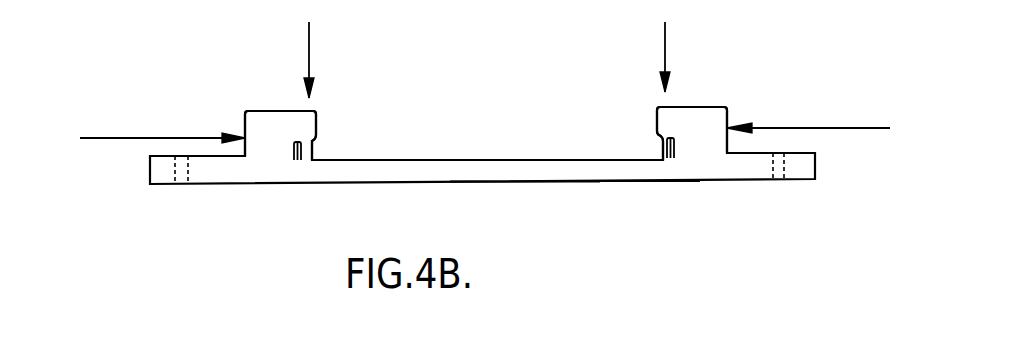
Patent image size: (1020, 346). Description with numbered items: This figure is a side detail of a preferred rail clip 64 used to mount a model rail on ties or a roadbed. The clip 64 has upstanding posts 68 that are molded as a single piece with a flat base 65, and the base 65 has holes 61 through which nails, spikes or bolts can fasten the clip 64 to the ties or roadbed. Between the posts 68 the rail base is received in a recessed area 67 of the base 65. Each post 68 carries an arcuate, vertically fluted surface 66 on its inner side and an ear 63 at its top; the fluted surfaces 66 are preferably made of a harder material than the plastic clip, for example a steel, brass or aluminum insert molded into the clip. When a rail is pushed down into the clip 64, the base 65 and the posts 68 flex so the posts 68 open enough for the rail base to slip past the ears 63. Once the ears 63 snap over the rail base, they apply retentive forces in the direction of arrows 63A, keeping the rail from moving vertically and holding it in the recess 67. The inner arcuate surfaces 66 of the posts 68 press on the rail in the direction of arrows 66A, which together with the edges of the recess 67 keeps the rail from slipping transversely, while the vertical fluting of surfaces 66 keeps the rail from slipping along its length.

The holes 61 is at (178, 185).
The ears 63 is at (310, 110).
The arrows 63A is at (309, 42).
The clip 64 is at (628, 185).
The base 65 is at (590, 183).
The fluted surfaces 66 is at (312, 149).
The arrows 66A is at (192, 135).
The recessed area 67 is at (490, 146).
The upstanding posts 68 is at (712, 104).